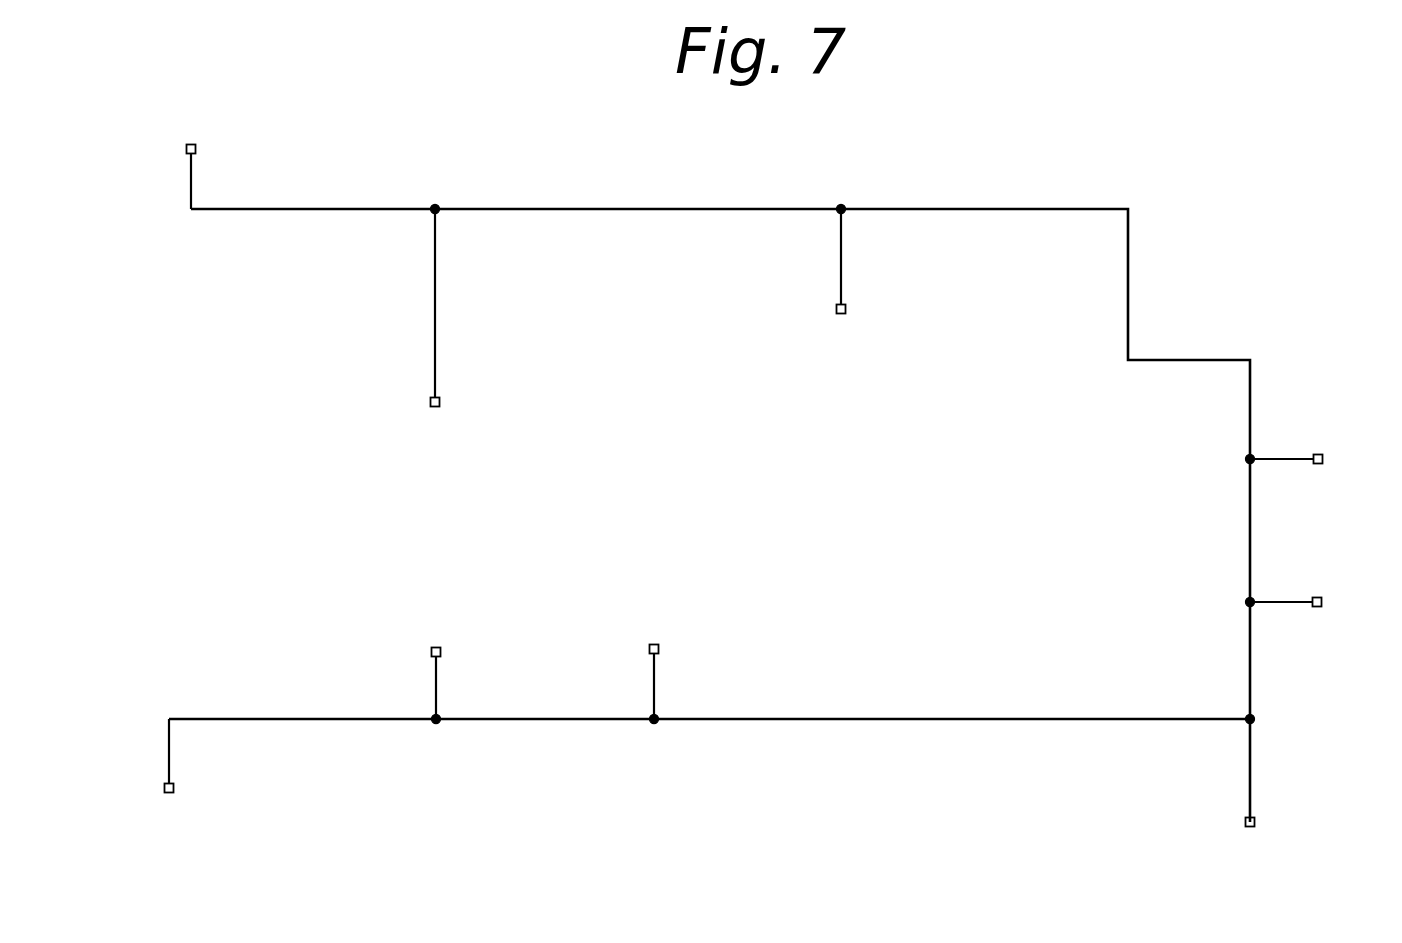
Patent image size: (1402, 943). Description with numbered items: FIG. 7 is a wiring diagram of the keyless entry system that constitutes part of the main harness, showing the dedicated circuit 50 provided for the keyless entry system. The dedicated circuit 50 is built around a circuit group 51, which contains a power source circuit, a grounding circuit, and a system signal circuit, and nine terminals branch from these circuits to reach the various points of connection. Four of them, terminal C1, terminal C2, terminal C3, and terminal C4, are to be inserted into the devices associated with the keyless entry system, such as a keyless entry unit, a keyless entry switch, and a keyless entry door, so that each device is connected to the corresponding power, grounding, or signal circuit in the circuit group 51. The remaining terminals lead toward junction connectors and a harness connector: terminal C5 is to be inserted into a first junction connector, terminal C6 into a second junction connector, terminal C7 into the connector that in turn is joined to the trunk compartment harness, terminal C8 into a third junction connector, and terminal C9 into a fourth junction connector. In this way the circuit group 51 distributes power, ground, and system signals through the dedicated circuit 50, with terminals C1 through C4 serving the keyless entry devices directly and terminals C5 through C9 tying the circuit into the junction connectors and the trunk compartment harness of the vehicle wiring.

The dedicated circuit 50 is at (355, 478).
The circuit group 51 is at (644, 207).
The terminal C1 is at (436, 323).
The terminal C2 is at (1306, 461).
The terminal C3 is at (1307, 604).
The terminal C4 is at (166, 773).
The terminal C5 is at (188, 160).
The terminal C6 is at (840, 278).
The terminal C7 is at (1271, 777).
The terminal C8 is at (650, 669).
The terminal C9 is at (435, 669).